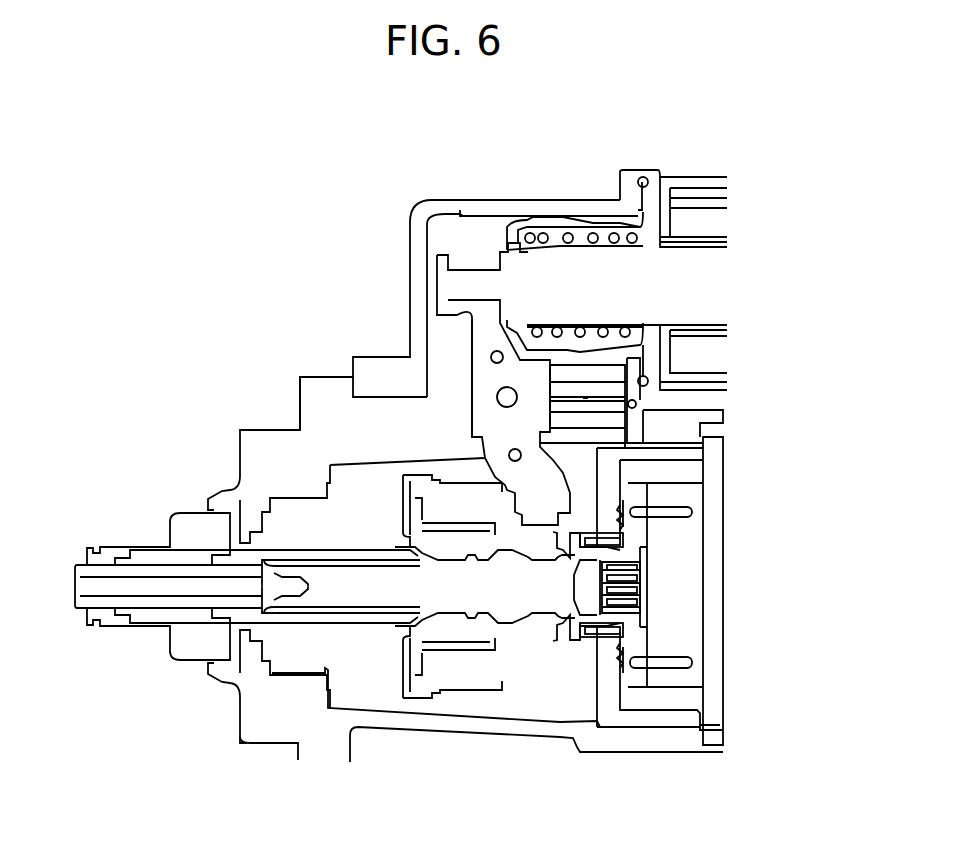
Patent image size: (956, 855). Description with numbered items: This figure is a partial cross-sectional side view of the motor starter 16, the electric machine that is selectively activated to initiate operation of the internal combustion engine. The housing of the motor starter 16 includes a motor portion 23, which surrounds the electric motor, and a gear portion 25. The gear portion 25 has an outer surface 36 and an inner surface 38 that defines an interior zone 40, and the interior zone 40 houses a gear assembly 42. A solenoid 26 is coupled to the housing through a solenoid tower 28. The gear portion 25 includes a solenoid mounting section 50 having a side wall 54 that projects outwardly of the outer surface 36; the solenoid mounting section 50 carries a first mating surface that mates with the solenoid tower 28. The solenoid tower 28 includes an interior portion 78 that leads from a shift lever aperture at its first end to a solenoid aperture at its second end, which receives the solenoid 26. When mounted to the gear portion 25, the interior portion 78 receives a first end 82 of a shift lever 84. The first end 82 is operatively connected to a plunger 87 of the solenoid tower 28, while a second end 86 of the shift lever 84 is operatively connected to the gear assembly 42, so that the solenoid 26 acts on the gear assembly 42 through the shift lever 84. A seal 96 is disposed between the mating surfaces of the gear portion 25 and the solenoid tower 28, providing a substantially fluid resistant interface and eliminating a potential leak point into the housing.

The motor starter 16 is at (182, 405).
The motor portion 23 is at (720, 440).
The gear portion 25 is at (270, 412).
The solenoid 26 is at (716, 165).
The solenoid tower 28 is at (489, 185).
The outer surface 36 is at (448, 725).
The inner surface 38 is at (350, 466).
The interior zone 40 is at (302, 522).
The gear assembly 42 is at (558, 698).
The solenoid mounting section 50 is at (290, 385).
The side wall 54 is at (645, 411).
The interior portion 78 is at (486, 219).
The first end 82 is at (478, 308).
The shift lever 84 is at (440, 342).
The second end 86 is at (563, 520).
The plunger 87 is at (540, 287).
The seal 96 is at (388, 397).